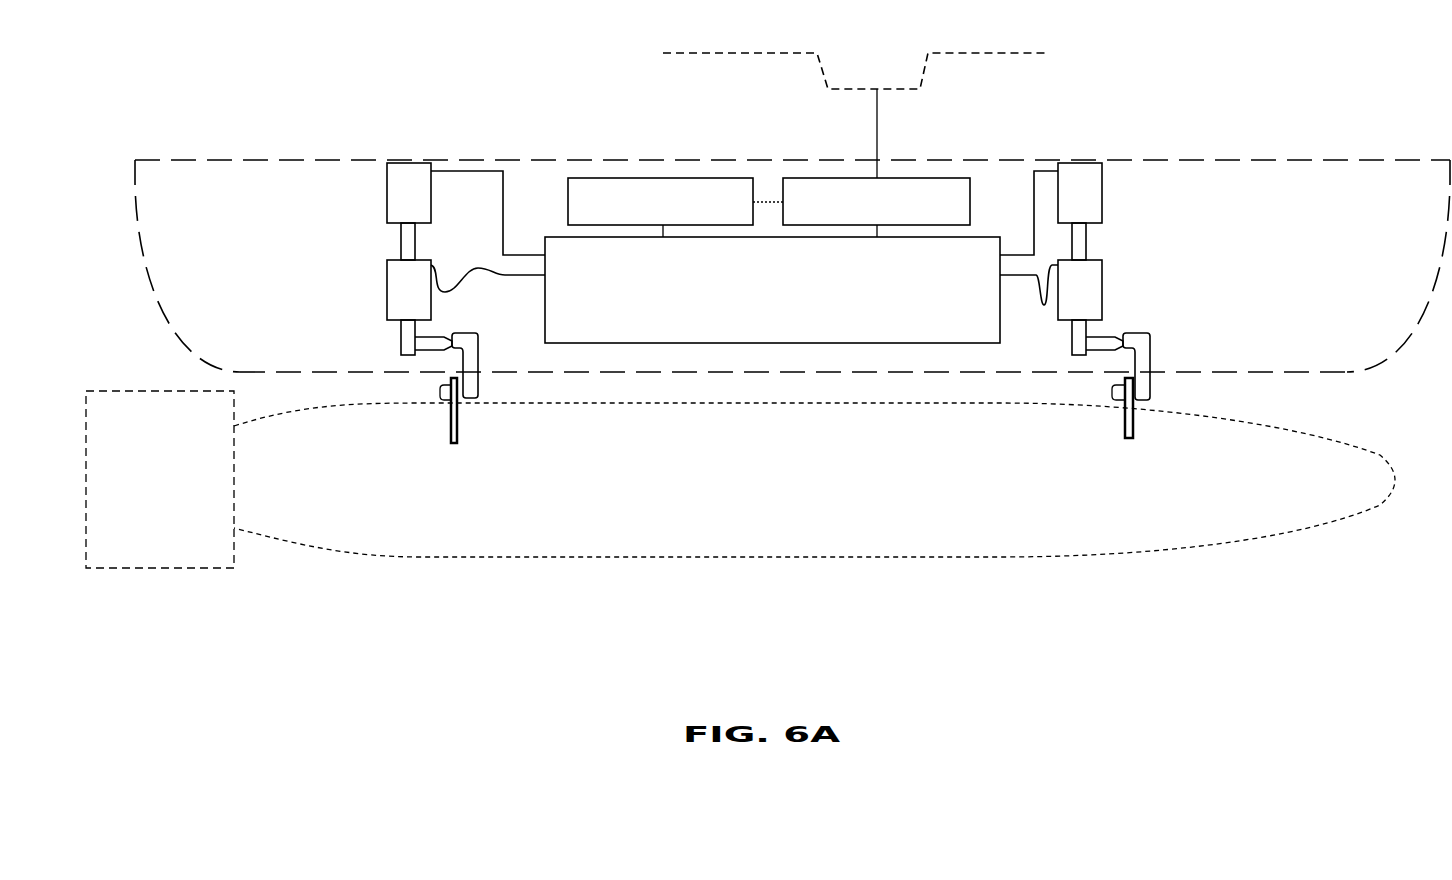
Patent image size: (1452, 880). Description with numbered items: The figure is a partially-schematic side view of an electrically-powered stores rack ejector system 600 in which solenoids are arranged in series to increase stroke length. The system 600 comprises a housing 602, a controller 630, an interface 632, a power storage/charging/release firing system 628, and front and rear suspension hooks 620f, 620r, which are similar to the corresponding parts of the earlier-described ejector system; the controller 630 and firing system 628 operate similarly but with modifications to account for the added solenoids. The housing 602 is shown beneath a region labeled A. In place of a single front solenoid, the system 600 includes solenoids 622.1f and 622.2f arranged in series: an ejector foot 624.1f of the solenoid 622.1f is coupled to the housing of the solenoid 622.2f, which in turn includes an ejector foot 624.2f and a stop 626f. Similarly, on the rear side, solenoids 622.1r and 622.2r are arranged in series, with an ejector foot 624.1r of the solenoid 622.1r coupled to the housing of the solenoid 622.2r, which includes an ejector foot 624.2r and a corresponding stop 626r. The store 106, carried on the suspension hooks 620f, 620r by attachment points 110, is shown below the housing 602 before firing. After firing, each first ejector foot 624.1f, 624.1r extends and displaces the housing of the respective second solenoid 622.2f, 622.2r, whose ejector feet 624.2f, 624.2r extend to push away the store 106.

The electrically-powered stores rack ejector system 600 is at (522, 112).
The housing 602 is at (1253, 160).
The aircraft attachment region A is at (1045, 53).
The controller 630 is at (728, 178).
The interface 632 is at (953, 178).
The power storage/charging/release firing system 628 is at (985, 343).
The solenoid 622.1r is at (387, 187).
The ejector foot 624.1r is at (401, 240).
The solenoid 622.2r is at (387, 283).
The ejector foot 624.2r is at (401, 334).
The solenoid 622.1f is at (1102, 172).
The ejector foot 624.1f is at (1086, 240).
The solenoid 622.2f is at (1102, 265).
The ejector foot 624.2f is at (1086, 330).
The rear connector 626r is at (452, 346).
The stop 626f is at (1113, 352).
The suspension hook 620r is at (480, 388).
The suspension hook 620f is at (1150, 392).
The attachment pin / lug 110 is at (454, 443).
The store 106 is at (620, 559).